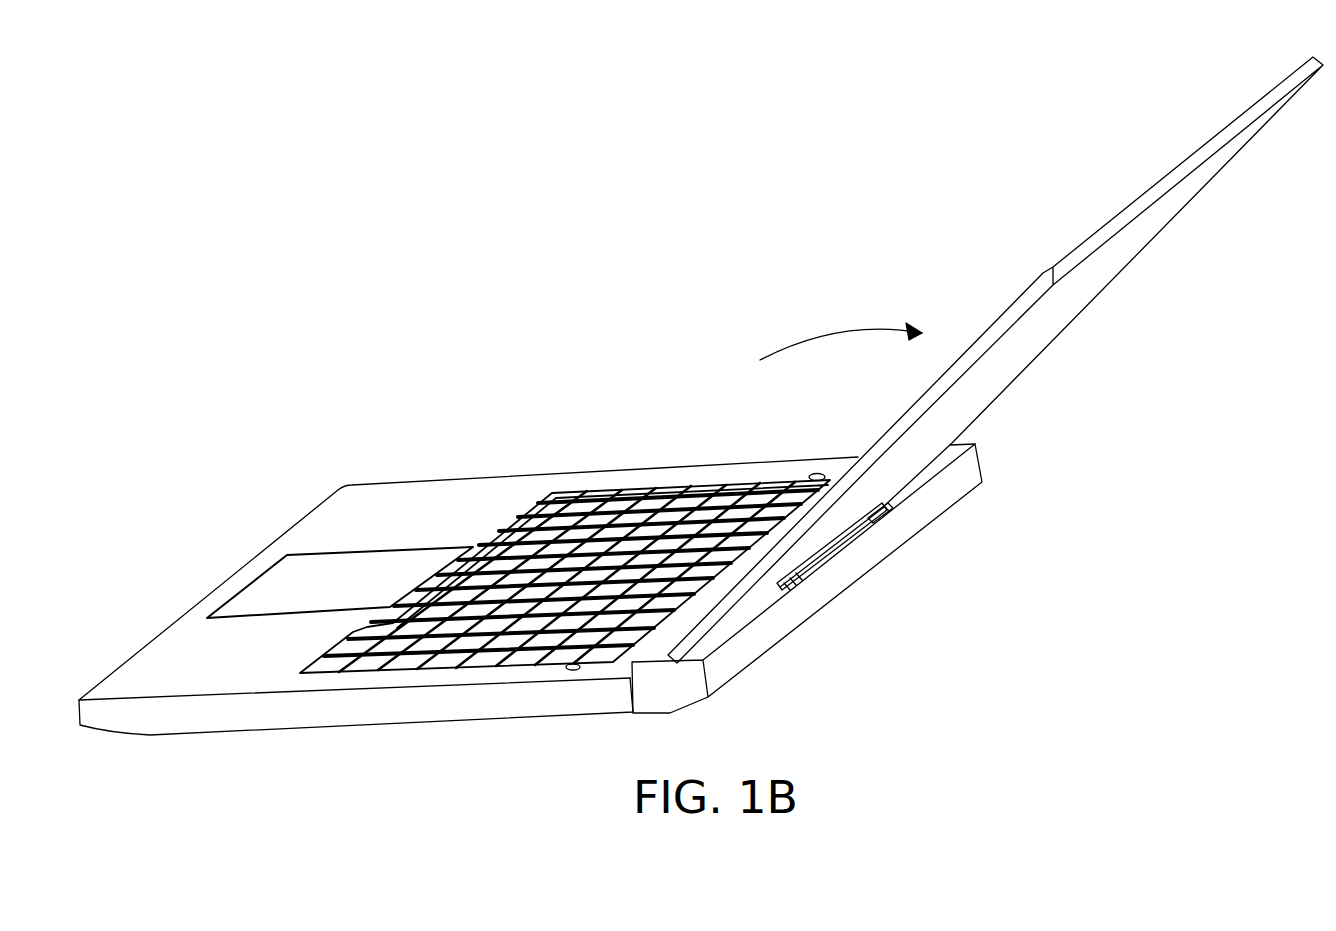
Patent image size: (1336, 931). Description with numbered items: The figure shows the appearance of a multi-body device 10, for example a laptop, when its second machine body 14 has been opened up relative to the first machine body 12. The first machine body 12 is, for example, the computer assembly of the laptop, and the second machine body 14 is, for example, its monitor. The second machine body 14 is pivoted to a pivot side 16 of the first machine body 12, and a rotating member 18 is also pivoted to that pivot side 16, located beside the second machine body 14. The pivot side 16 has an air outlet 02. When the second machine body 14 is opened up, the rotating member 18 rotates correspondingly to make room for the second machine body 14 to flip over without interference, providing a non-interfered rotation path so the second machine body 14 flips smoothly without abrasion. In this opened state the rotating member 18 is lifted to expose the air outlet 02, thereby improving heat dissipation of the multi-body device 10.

The multi-body device 10 is at (701, 421).
The first machine body 12 is at (500, 700).
The second machine body 14 is at (1123, 255).
The pivot side 16 is at (747, 670).
The rotating member 18 is at (850, 543).
The air outlet 02 is at (877, 528).